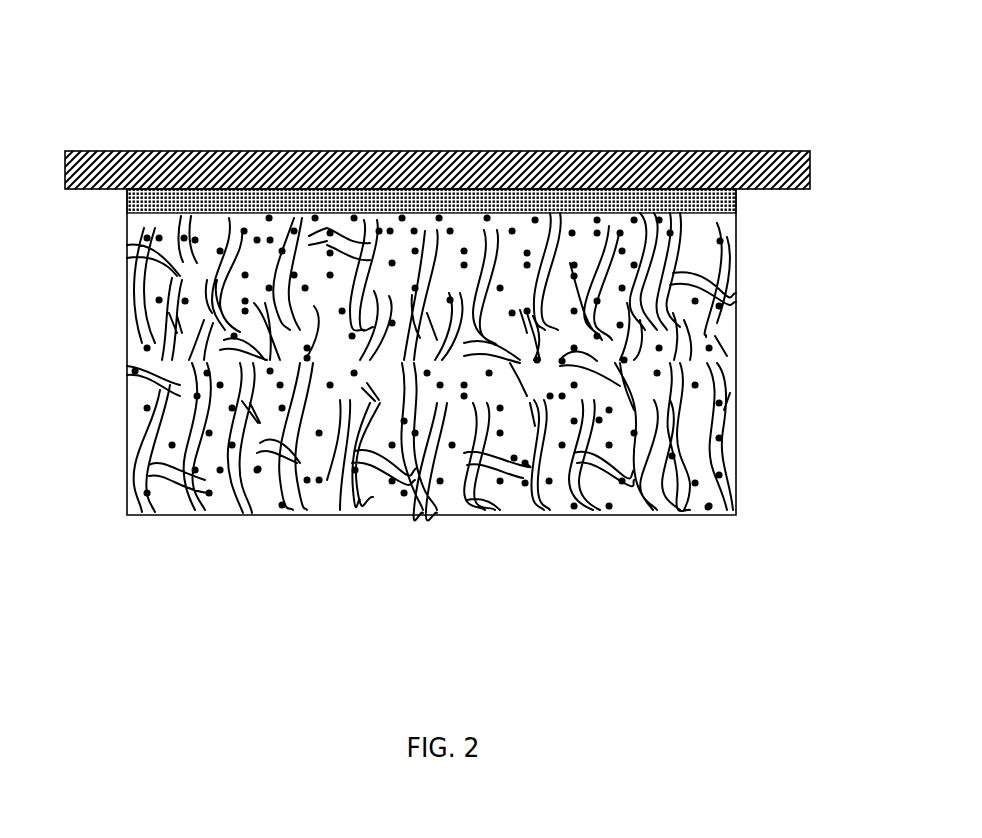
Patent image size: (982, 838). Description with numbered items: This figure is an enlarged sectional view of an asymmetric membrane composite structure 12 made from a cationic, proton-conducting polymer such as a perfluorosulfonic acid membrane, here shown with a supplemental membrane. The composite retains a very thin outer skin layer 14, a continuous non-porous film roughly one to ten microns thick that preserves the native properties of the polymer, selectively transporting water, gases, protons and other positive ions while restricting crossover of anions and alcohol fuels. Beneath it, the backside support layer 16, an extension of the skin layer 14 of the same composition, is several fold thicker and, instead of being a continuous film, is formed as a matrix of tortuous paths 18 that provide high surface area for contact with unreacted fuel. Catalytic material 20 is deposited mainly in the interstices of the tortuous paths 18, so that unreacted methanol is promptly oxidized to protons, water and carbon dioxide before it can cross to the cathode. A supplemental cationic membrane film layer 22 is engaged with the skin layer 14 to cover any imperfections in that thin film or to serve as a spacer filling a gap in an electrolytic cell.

The asymmetric membrane composite structure 12 is at (613, 127).
The thin skin layer 14 is at (737, 199).
The backside support layer 16 is at (126, 347).
The tortuous paths 18 is at (140, 297).
The catalytic material 20 is at (172, 445).
The supplemental cationic membrane film layer 22 is at (212, 151).